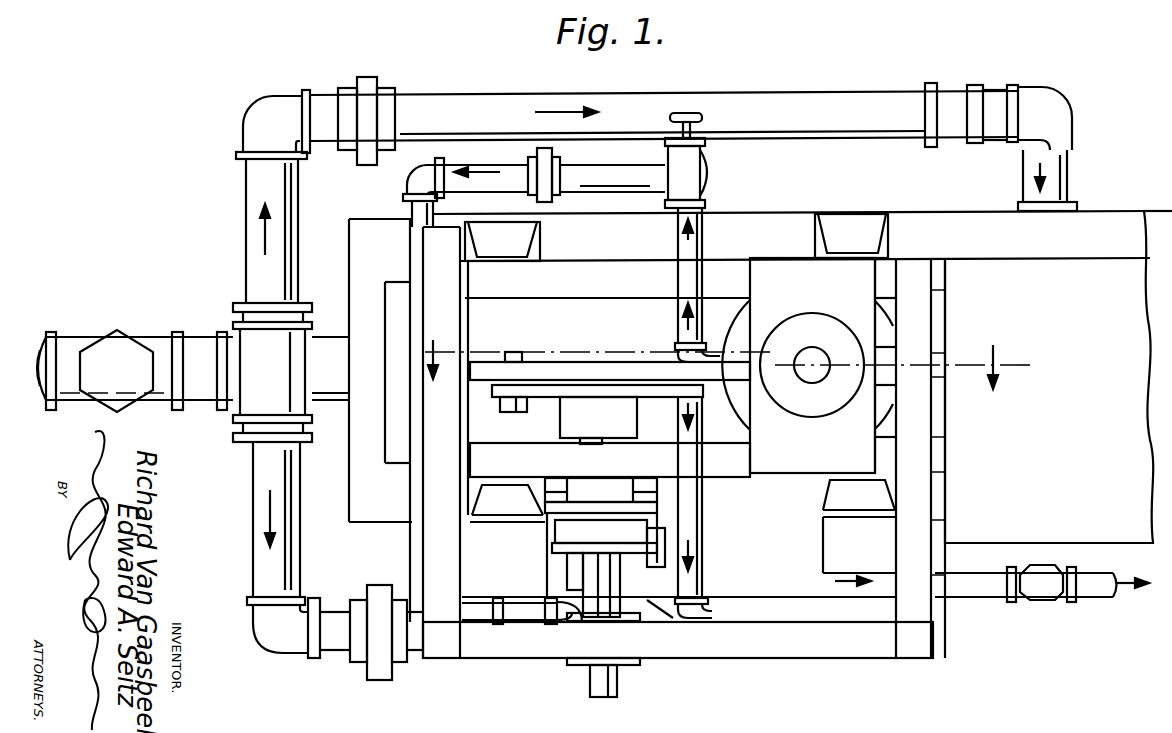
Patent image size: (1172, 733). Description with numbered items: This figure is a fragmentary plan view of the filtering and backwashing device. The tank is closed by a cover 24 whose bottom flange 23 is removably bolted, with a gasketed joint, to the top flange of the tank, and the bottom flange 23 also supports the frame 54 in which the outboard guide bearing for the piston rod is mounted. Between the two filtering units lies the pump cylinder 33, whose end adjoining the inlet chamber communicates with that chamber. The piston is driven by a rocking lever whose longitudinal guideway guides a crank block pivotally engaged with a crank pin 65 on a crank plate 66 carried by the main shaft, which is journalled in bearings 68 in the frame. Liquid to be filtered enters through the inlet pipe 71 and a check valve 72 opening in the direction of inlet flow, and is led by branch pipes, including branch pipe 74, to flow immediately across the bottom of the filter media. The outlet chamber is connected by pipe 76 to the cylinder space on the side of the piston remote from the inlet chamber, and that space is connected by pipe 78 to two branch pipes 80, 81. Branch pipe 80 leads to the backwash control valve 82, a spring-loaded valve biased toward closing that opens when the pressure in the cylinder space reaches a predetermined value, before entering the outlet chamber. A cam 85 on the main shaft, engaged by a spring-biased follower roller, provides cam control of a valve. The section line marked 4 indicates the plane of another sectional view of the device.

The figure section line 4 is at (711, 379).
The bottom flange 23 is at (385, 522).
The cover 24 is at (386, 453).
The pump cylinder 33 is at (882, 424).
The frame 54 is at (812, 365).
The crank pin 65 is at (514, 352).
The crank plate 66 is at (548, 400).
The bearings 68 is at (590, 668).
The pipe 71 is at (37, 345).
The check valve 72 is at (118, 348).
The branch pipe 74 is at (1063, 172).
The pipe 76 is at (937, 367).
The pipe 78 is at (740, 365).
The branch pipe 80 is at (677, 240).
The branch pipe 81 is at (705, 546).
The backwash control valve 82 is at (702, 174).
The cam 85 is at (562, 547).